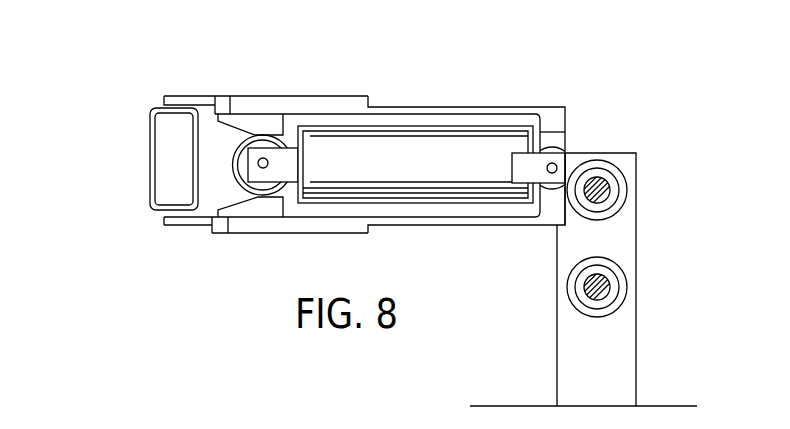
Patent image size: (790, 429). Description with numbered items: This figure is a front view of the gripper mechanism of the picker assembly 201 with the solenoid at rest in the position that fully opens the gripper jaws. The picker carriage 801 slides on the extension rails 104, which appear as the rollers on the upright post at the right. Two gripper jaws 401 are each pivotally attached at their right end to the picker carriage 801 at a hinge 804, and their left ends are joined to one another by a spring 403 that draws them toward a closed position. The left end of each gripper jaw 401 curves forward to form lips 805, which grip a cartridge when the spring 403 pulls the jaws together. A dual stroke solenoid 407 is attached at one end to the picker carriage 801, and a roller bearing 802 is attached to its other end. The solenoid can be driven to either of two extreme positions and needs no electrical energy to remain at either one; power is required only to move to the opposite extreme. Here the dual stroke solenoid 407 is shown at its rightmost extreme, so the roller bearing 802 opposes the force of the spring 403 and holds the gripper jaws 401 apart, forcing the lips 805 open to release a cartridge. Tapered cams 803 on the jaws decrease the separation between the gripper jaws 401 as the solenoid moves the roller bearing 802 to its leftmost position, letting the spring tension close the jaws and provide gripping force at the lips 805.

The extension rails 104 is at (607, 288).
The picker assembly 201 is at (594, 132).
The gripper jaws 401 is at (477, 107).
The spring 403 is at (168, 152).
The dual stroke solenoid 407 is at (372, 150).
The picker carriage 801 is at (620, 370).
The roller bearing 802 is at (235, 172).
The tapered cams 803 is at (243, 119).
The hinge 804 is at (562, 158).
The lips 805 is at (310, 107).